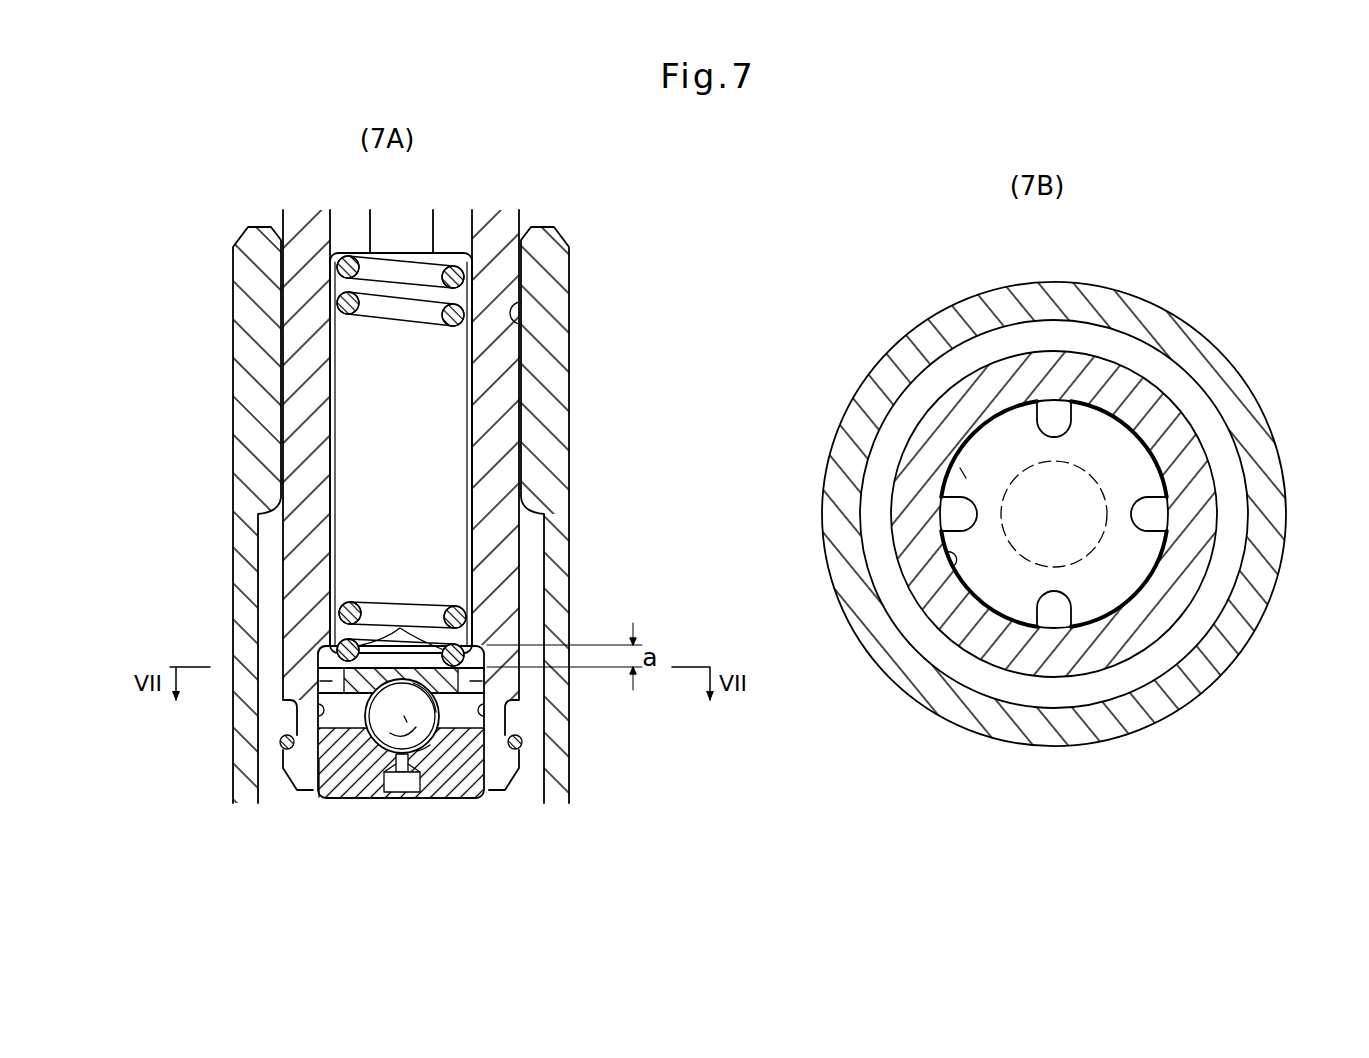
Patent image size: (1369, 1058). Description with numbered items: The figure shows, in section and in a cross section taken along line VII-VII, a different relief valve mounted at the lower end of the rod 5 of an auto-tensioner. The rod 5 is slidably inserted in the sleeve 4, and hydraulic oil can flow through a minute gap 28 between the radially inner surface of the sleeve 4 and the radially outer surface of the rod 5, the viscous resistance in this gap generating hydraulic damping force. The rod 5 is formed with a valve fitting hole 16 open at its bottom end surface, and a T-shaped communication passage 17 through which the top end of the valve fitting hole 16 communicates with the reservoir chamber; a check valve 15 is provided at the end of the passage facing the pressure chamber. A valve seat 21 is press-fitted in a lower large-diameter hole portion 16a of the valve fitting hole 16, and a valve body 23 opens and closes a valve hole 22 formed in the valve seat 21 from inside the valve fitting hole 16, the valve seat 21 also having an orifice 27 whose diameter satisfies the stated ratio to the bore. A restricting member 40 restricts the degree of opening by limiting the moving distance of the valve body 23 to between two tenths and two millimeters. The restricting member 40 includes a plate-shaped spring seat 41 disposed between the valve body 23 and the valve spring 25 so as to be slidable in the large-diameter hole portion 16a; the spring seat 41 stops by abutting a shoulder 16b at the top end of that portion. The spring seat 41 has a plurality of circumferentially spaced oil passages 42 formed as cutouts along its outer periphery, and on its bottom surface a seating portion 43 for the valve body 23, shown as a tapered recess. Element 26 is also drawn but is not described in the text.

In FIG. 7A, the sleeve 4 is at (250, 392).
In FIG. 7B, the sleeve 4 is at (1123, 313).
In FIG. 7A, the rod 5 is at (297, 290).
In FIG. 7B, the rod 5 is at (1138, 395).
In FIG. 7A, the check valve 15 is at (362, 800).
In FIG. 7A, the valve fitting hole 16 is at (342, 337).
In FIG. 7A, the large-diameter hole portion 16a is at (320, 708).
In FIG. 7B, the large-diameter hole portion 16a is at (957, 560).
In FIG. 7A, the shoulder 16b is at (328, 648).
In FIG. 7A, the communication passage 17 is at (383, 232).
In FIG. 7A, the valve seat 21 is at (333, 778).
In FIG. 7A, the valve hole 22 is at (395, 782).
In FIG. 7A, the valve body 23 is at (425, 714).
In FIG. 7B, the valve body 23 is at (1100, 495).
In FIG. 7A, the valve spring 25 is at (468, 605).
In FIG. 7A, the valve seat 26 is at (428, 746).
In FIG. 7A, the orifice 27 is at (410, 766).
In FIG. 7A, the minute gap 28 is at (523, 326).
In FIG. 7A, the restricting member 40 is at (393, 665).
In FIG. 7B, the restricting member 40 is at (973, 425).
In FIG. 7A, the spring seat 41 is at (440, 655).
In FIG. 7B, the spring seat 41 is at (962, 472).
In FIG. 7A, the oil passages 42 is at (335, 681).
In FIG. 7B, the oil passages 42 is at (1045, 408).
In FIG. 7A, the seating portion 43 is at (440, 718).